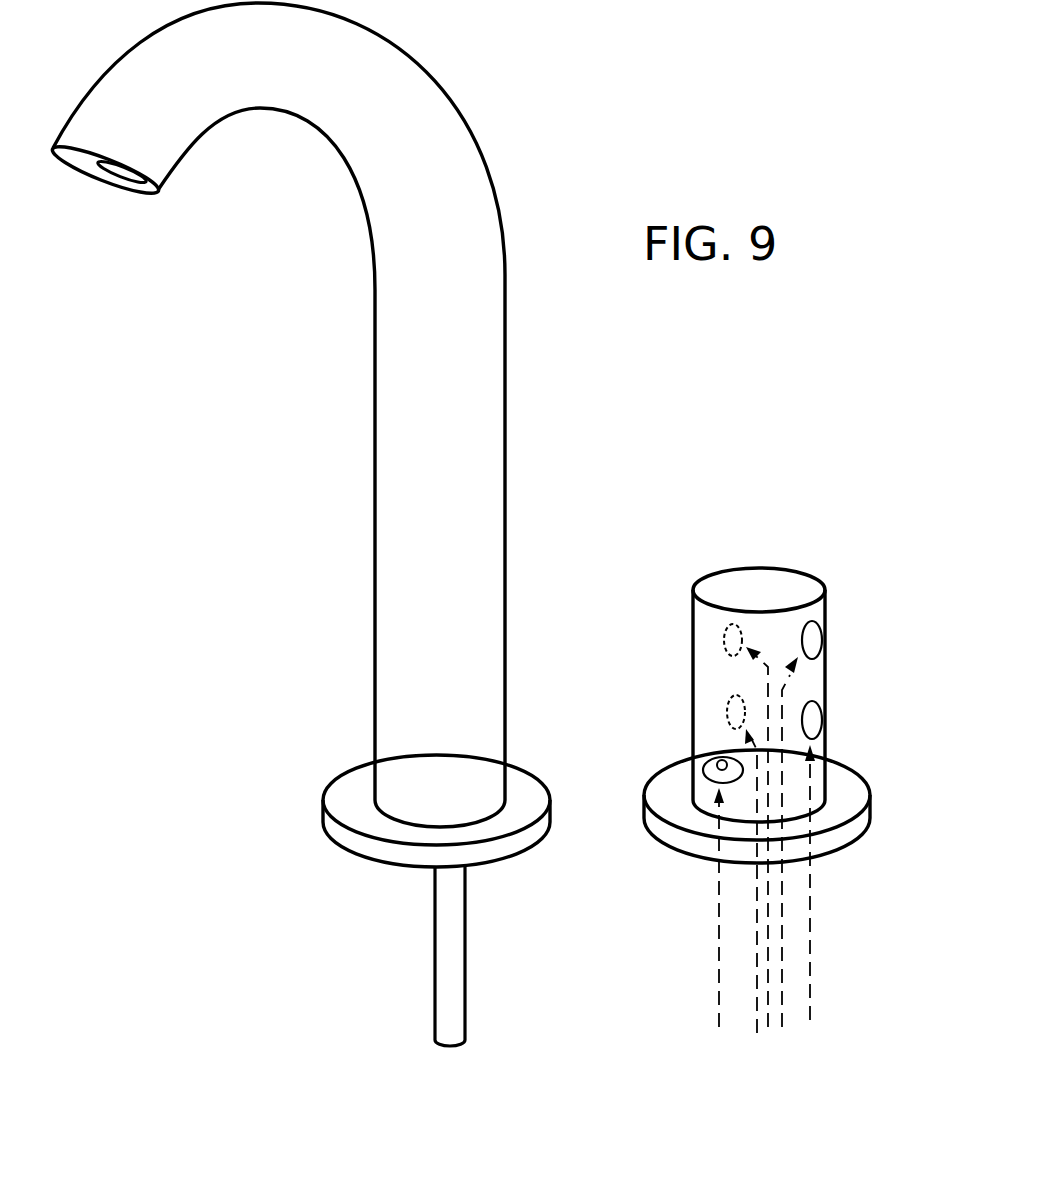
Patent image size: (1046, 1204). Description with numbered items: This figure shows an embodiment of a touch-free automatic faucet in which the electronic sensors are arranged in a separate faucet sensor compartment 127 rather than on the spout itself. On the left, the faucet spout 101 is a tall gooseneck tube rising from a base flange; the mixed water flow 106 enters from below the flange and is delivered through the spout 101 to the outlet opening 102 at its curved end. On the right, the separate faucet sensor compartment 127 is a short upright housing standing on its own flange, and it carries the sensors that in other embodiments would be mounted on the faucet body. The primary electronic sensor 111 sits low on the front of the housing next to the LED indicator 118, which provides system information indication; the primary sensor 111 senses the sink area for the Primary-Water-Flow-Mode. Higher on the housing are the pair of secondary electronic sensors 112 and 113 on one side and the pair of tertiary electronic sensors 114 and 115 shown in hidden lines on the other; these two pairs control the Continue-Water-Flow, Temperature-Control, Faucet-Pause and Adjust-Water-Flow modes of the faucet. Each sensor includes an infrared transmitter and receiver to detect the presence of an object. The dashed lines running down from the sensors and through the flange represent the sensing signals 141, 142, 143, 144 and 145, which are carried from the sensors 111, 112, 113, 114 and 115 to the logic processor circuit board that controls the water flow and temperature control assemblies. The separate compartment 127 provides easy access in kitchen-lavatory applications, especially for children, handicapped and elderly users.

The faucet spout 101 is at (464, 96).
The outlet 102 is at (106, 192).
The mixed water flow to faucet 106 is at (421, 909).
The separate faucet sensor compartment 127 is at (817, 569).
The secondary electronic sensor A 112 is at (833, 620).
The secondary electronic sensor B 113 is at (833, 695).
The tertiary electronic sensor D 114 is at (707, 627).
The tertiary electronic sensor E 115 is at (713, 695).
The LED indicator 118 is at (701, 752).
The primary electronic sensor C 111 is at (687, 772).
The sensing signal 141 is at (705, 883).
The sensing signal 142 is at (798, 901).
The sensing signal 143 is at (825, 941).
The sensing signal 144 is at (783, 995).
The sensing signal 145 is at (742, 917).